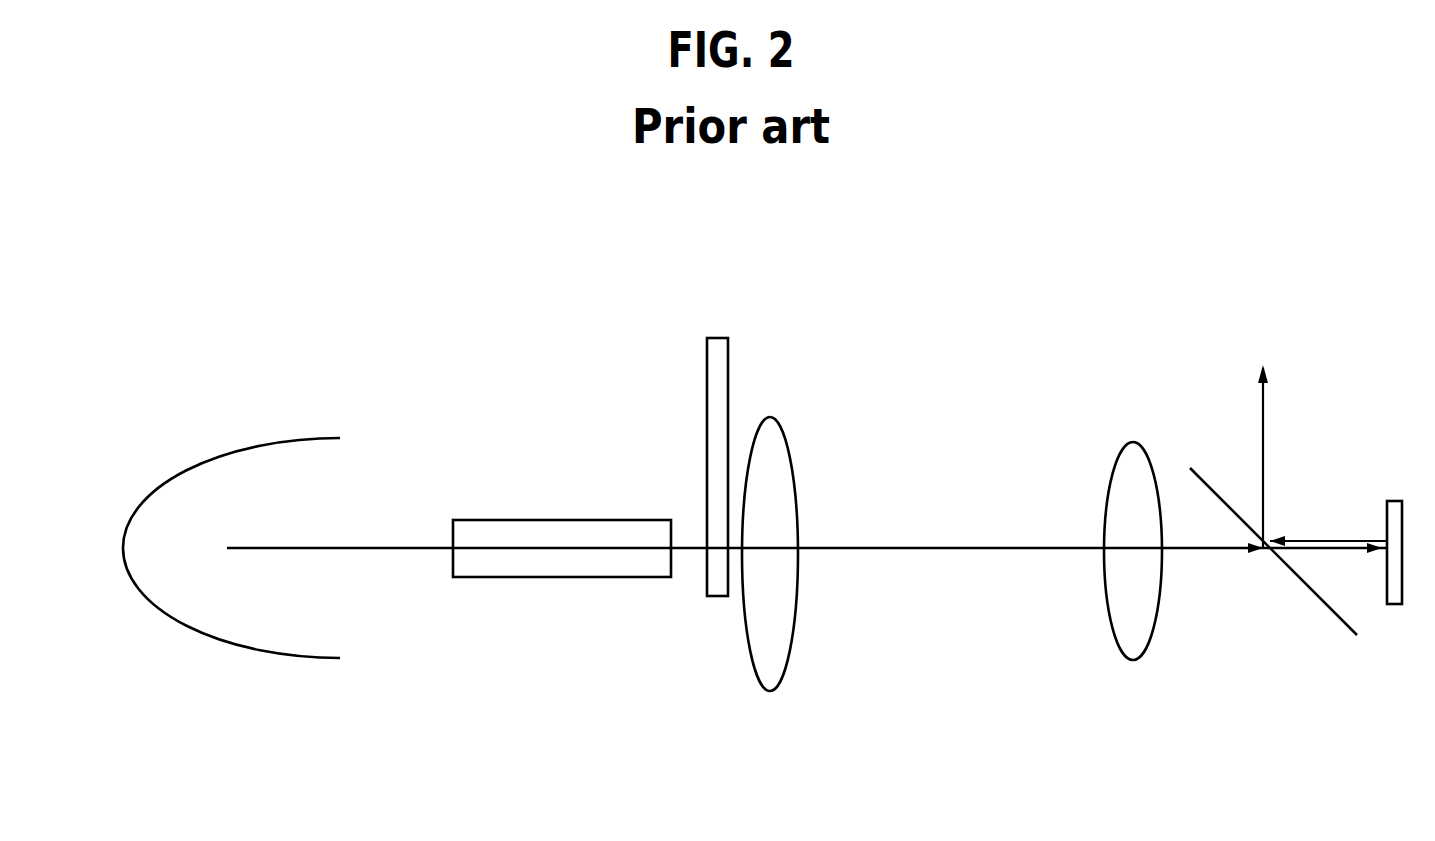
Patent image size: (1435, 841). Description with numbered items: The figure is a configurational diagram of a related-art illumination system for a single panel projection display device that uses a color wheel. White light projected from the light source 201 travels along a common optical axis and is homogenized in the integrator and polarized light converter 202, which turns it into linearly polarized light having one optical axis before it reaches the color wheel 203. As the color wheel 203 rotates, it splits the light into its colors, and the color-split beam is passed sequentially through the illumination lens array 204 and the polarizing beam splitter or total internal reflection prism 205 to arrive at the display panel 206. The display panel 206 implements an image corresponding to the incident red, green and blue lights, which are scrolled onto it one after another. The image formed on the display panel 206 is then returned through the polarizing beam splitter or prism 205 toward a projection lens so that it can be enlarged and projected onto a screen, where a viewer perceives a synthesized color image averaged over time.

The light source 201 is at (210, 638).
The integrator and polarized light converter 202 is at (557, 520).
The color wheel 203 is at (730, 378).
The illumination lens array 204 is at (1127, 643).
The polarizing beam splitter (PBS) or TIR prism 205 is at (1305, 585).
The display panel 206 is at (1395, 500).